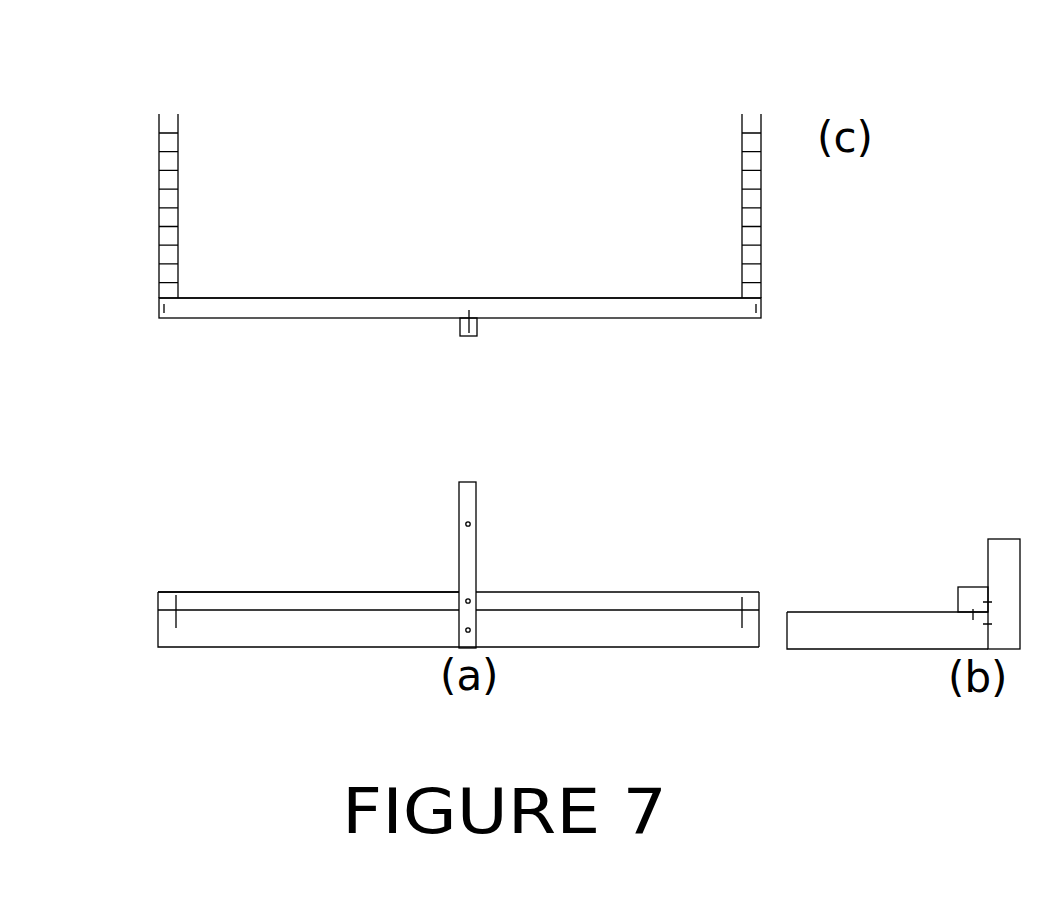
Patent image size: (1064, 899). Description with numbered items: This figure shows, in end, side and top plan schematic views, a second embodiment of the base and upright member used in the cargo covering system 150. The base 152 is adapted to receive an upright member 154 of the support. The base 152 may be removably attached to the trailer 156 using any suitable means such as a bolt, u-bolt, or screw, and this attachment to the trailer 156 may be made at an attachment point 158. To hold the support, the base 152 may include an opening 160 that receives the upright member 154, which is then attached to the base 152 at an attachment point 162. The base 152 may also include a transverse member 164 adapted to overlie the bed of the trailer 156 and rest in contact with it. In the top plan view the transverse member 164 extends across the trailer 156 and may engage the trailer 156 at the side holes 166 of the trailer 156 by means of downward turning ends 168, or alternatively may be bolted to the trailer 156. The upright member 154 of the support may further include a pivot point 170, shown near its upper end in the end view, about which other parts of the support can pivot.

The cargo covering system 150 is at (302, 100).
The base 152 is at (427, 573).
The upright member 154 is at (468, 336).
The trailer 156 is at (263, 272).
The attachment point 158 is at (468, 630).
The opening 160 is at (472, 333).
The attachment point 162 is at (468, 601).
The transverse member 164 is at (602, 320).
The side holes 166 is at (757, 236).
The downward turning ends 168 is at (158, 307).
The pivot point 170 is at (468, 524).